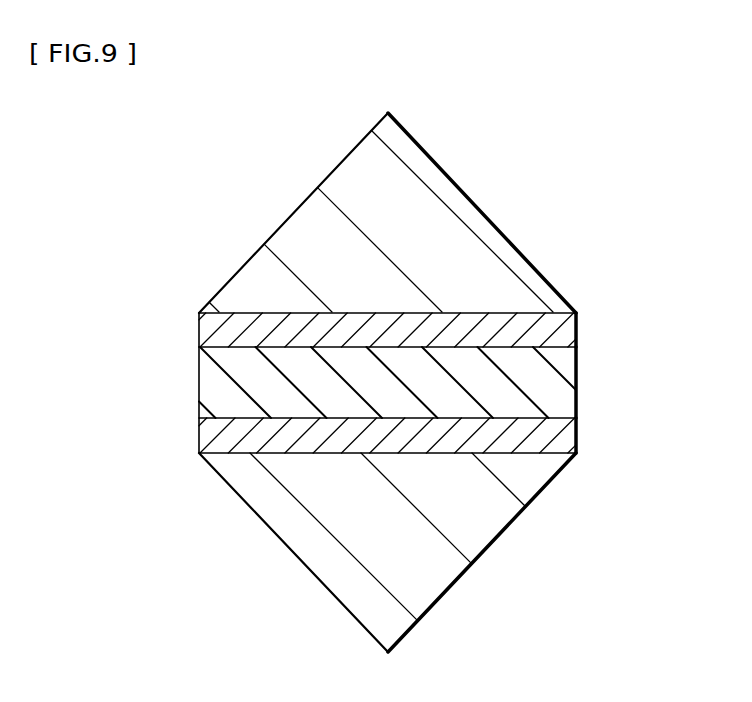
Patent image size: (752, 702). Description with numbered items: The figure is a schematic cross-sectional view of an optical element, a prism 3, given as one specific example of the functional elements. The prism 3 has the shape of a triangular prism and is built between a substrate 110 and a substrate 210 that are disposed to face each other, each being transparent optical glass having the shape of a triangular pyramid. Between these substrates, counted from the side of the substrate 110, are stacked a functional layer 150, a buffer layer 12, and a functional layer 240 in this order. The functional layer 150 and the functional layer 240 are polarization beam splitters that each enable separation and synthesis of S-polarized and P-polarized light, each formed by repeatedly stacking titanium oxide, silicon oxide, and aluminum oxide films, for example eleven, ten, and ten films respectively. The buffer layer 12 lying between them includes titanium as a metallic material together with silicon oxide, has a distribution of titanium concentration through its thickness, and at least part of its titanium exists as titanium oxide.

The prism 3 is at (429, 382).
The buffer layer 12 is at (563, 382).
The substrate 110 is at (475, 553).
The functional layer 150 is at (568, 434).
The substrate 210 is at (475, 213).
The functional layer 240 is at (568, 329).